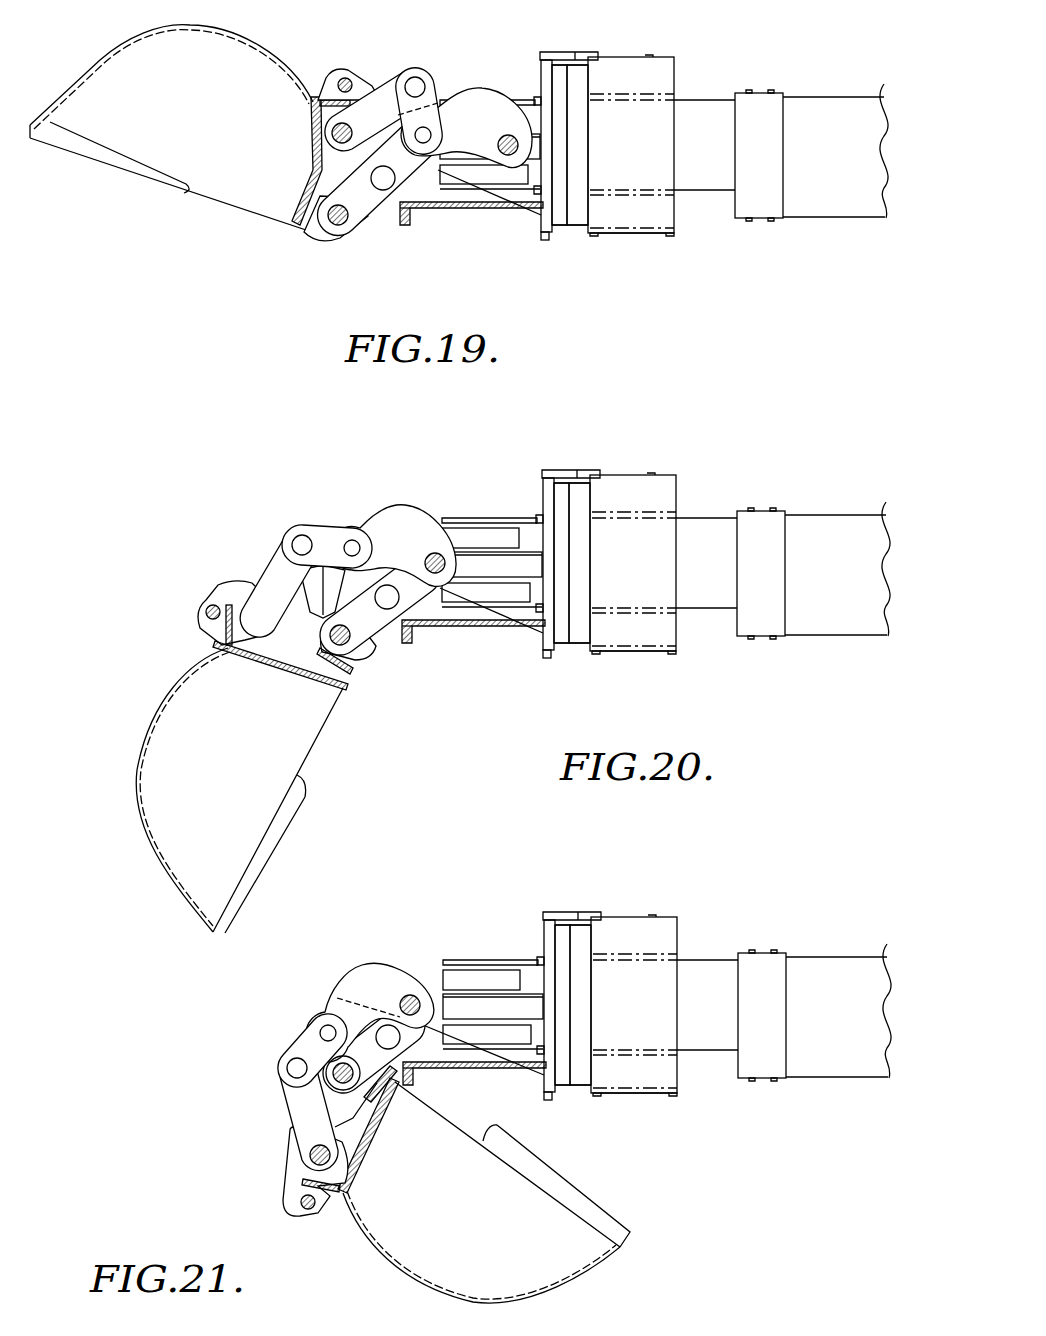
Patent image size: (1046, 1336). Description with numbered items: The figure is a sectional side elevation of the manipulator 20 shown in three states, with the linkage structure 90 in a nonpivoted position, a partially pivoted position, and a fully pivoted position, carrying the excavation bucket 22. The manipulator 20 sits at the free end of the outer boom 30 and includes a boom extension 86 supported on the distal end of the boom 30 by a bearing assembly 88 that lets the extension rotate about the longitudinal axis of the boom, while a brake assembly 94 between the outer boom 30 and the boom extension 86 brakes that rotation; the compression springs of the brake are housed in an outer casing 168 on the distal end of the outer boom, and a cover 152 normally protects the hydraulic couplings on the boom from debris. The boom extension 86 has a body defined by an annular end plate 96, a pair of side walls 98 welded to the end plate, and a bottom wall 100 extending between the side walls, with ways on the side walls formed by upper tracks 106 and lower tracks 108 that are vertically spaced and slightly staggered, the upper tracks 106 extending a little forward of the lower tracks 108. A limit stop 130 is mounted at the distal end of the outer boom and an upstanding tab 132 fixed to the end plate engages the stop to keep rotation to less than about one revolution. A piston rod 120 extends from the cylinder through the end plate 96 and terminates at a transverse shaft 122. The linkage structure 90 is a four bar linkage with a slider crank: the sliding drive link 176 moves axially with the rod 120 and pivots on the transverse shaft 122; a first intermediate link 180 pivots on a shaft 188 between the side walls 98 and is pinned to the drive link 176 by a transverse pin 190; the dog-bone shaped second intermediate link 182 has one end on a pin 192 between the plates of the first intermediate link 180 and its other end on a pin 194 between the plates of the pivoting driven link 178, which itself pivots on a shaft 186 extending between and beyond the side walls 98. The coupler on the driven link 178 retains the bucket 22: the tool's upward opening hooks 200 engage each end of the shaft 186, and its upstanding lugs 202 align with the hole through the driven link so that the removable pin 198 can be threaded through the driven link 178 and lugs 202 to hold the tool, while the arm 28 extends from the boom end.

In FIG. 19, the manipulator 20 is at (652, 238).
In FIG. 20, the manipulator 20 is at (656, 688).
In FIG. 21, the manipulator 20 is at (657, 1130).
In FIG. 19, the excavation bucket 22 is at (213, 183).
In FIG. 20, the excavation bucket 22 is at (157, 742).
In FIG. 21, the excavation bucket 22 is at (575, 1253).
In FIG. 19, the arm 28 is at (818, 212).
In FIG. 20, the arm 28 is at (813, 594).
In FIG. 21, the arm 28 is at (814, 1036).
In FIG. 19, the outer boom 30 is at (710, 105).
In FIG. 20, the outer boom 30 is at (727, 539).
In FIG. 21, the outer boom 30 is at (728, 981).
In FIG. 19, the boom extension 86 is at (429, 215).
In FIG. 20, the boom extension 86 is at (431, 675).
In FIG. 21, the boom extension 86 is at (442, 1124).
In FIG. 19, the bearing assembly 88 is at (581, 232).
In FIG. 20, the bearing assembly 88 is at (597, 665).
In FIG. 21, the bearing assembly 88 is at (598, 1107).
In FIG. 19, the linkage structure 90 is at (382, 156).
In FIG. 20, the linkage structure 90 is at (303, 584).
In FIG. 21, the linkage structure 90 is at (330, 1100).
In FIG. 19, the brake assembly 94 is at (559, 240).
In FIG. 20, the brake assembly 94 is at (588, 604).
In FIG. 21, the brake assembly 94 is at (589, 1046).
In FIG. 19, the annular end plate 96 is at (547, 85).
In FIG. 20, the annular end plate 96 is at (586, 564).
In FIG. 21, the annular end plate 96 is at (587, 1006).
In FIG. 19, the side walls 98 is at (521, 100).
In FIG. 20, the side walls 98 is at (516, 534).
In FIG. 21, the side walls 98 is at (517, 976).
In FIG. 19, the bottom wall 100 is at (452, 208).
In FIG. 20, the bottom wall 100 is at (473, 646).
In FIG. 21, the bottom wall 100 is at (474, 1074).
In FIG. 19, the upper tracks 106 is at (478, 120).
In FIG. 20, the upper tracks 106 is at (480, 502).
In FIG. 21, the upper tracks 106 is at (479, 943).
In FIG. 19, the lower tracks 108 is at (531, 177).
In FIG. 20, the lower tracks 108 is at (542, 563).
In FIG. 21, the lower tracks 108 is at (543, 1005).
In FIG. 19, the rod 120 is at (545, 145).
In FIG. 20, the rod 120 is at (542, 551).
In FIG. 21, the rod 120 is at (543, 993).
In FIG. 19, the transverse shaft 122 is at (506, 140).
In FIG. 20, the transverse shaft 122 is at (433, 552).
In FIG. 21, the transverse shaft 122 is at (410, 996).
In FIG. 19, the limit stop 130 is at (554, 52).
In FIG. 20, the limit stop 130 is at (580, 456).
In FIG. 21, the limit stop 130 is at (581, 898).
In FIG. 19, the upstanding tab 132 is at (546, 242).
In FIG. 20, the upstanding tab 132 is at (562, 689).
In FIG. 21, the upstanding tab 132 is at (563, 1131).
In FIG. 19, the cover 152 is at (645, 57).
In FIG. 20, the cover 152 is at (654, 544).
In FIG. 21, the cover 152 is at (655, 986).
In FIG. 19, the outer casing 168 is at (660, 205).
In FIG. 20, the outer casing 168 is at (671, 647).
In FIG. 21, the outer casing 168 is at (672, 1089).
In FIG. 19, the sliding drive link 176 is at (487, 96).
In FIG. 20, the sliding drive link 176 is at (423, 520).
In FIG. 21, the sliding drive link 176 is at (356, 979).
In FIG. 19, the pivoting driven link 178 is at (348, 70).
In FIG. 20, the pivoting driven link 178 is at (218, 593).
In FIG. 21, the pivoting driven link 178 is at (290, 1192).
In FIG. 19, the first intermediate link 180 is at (455, 210).
In FIG. 20, the first intermediate link 180 is at (330, 526).
In FIG. 21, the first intermediate link 180 is at (300, 1038).
In FIG. 19, the second intermediate link 182 is at (378, 96).
In FIG. 20, the second intermediate link 182 is at (278, 573).
In FIG. 21, the second intermediate link 182 is at (305, 1113).
In FIG. 19, the shaft 186 is at (335, 218).
In FIG. 20, the shaft 186 is at (336, 641).
In FIG. 21, the shaft 186 is at (358, 1118).
In FIG. 19, the shaft 188 is at (383, 182).
In FIG. 20, the shaft 188 is at (387, 604).
In FIG. 21, the shaft 188 is at (413, 1050).
In FIG. 19, the transverse pin 190 is at (430, 130).
In FIG. 20, the transverse pin 190 is at (352, 540).
In FIG. 21, the transverse pin 190 is at (324, 1027).
In FIG. 19, the pin 192 is at (415, 78).
In FIG. 20, the pin 192 is at (300, 535).
In FIG. 21, the pin 192 is at (293, 1070).
In FIG. 19, the pin 194 is at (338, 130).
In FIG. 20, the pin 194 is at (239, 650).
In FIG. 21, the pin 194 is at (313, 1157).
In FIG. 19, the pin 198 is at (343, 84).
In FIG. 20, the pin 198 is at (205, 611).
In FIG. 21, the pin 198 is at (300, 1206).
In FIG. 19, the hooks 200 is at (340, 240).
In FIG. 20, the hooks 200 is at (353, 664).
In FIG. 21, the hooks 200 is at (378, 1104).
In FIG. 19, the upstanding lugs 202 is at (308, 88).
In FIG. 20, the upstanding lugs 202 is at (220, 632).
In FIG. 21, the upstanding lugs 202 is at (342, 1203).